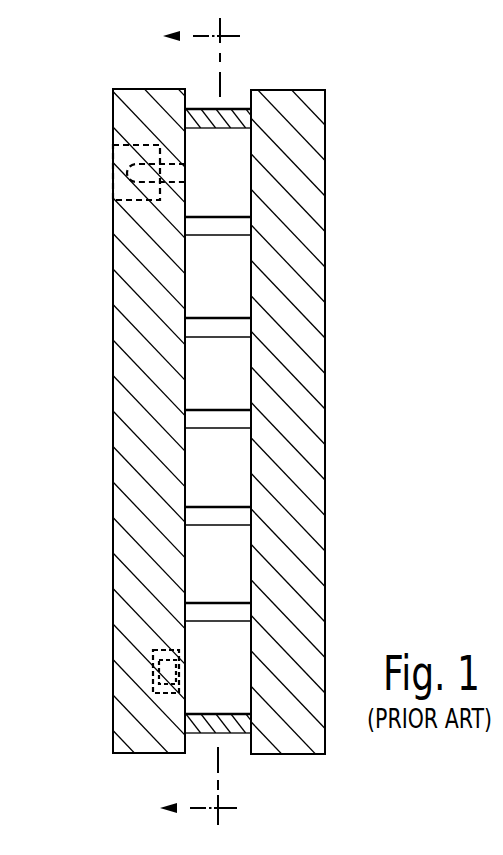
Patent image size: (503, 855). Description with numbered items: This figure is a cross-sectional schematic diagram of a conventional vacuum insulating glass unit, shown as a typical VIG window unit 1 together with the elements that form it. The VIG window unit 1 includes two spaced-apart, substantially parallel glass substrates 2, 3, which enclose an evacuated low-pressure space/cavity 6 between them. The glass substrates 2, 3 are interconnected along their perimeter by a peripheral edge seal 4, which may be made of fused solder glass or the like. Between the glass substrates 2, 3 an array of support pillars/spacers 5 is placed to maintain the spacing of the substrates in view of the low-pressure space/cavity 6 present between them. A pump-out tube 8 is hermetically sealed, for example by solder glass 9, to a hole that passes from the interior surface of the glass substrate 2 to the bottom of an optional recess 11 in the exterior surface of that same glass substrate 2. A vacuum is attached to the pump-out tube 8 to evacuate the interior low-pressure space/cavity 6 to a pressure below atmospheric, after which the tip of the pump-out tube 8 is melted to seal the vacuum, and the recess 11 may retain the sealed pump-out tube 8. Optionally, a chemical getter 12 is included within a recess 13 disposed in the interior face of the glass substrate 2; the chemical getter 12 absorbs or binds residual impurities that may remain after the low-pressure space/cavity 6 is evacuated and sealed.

The VIG window unit 1 is at (342, 176).
The glass substrate 2 is at (112, 474).
The glass substrate 3 is at (294, 350).
The peripheral edge seal 4 is at (233, 118).
The support pillars/spacers 5 is at (224, 422).
The low-pressure space/cavity 6 is at (202, 548).
The pump-out tube 8 is at (128, 173).
The solder glass 9 is at (160, 155).
The recess 11 is at (126, 210).
The chemical getter 12 is at (168, 670).
The recess 13 is at (156, 704).